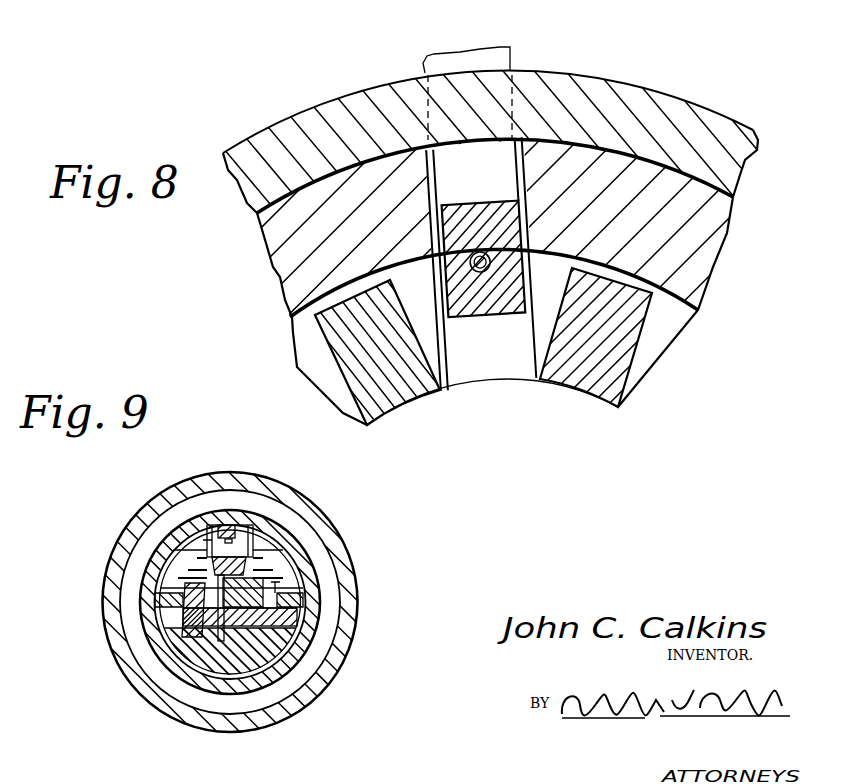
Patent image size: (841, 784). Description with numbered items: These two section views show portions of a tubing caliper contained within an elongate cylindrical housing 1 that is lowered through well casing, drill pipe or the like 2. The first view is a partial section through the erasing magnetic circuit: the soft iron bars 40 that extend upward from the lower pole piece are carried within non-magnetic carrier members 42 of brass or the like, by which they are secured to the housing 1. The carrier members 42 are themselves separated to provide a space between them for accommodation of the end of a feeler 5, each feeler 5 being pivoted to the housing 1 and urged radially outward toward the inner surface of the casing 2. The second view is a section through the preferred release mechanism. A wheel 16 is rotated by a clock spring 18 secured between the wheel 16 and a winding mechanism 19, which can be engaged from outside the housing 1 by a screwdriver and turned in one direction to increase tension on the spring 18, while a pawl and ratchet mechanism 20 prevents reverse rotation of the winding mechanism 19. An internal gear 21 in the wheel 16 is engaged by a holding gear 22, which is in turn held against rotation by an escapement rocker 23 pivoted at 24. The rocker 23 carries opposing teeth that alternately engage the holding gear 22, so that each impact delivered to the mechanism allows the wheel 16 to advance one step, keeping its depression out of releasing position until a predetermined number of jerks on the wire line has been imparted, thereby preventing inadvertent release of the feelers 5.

In FIG. 8, the housing 1 is at (673, 110).
In FIG. 9, the housing 1 is at (186, 528).
In FIG. 9, the well casing 2 is at (143, 500).
In FIG. 8, the feeler 5 is at (508, 56).
In FIG. 9, the wheel 16 is at (265, 597).
In FIG. 9, the clock spring 18 is at (257, 570).
In FIG. 9, the winding mechanism 19 is at (218, 530).
In FIG. 9, the pawl and ratchet mechanism 20 is at (205, 539).
In FIG. 9, the internal gear 21 is at (220, 607).
In FIG. 9, the holding gear 22 is at (180, 622).
In FIG. 9, the escapement rocker 23 is at (265, 618).
In FIG. 9, the pivot 24 is at (224, 640).
In FIG. 8, the soft iron bars 40 is at (567, 380).
In FIG. 8, the carrier members 42 is at (705, 241).